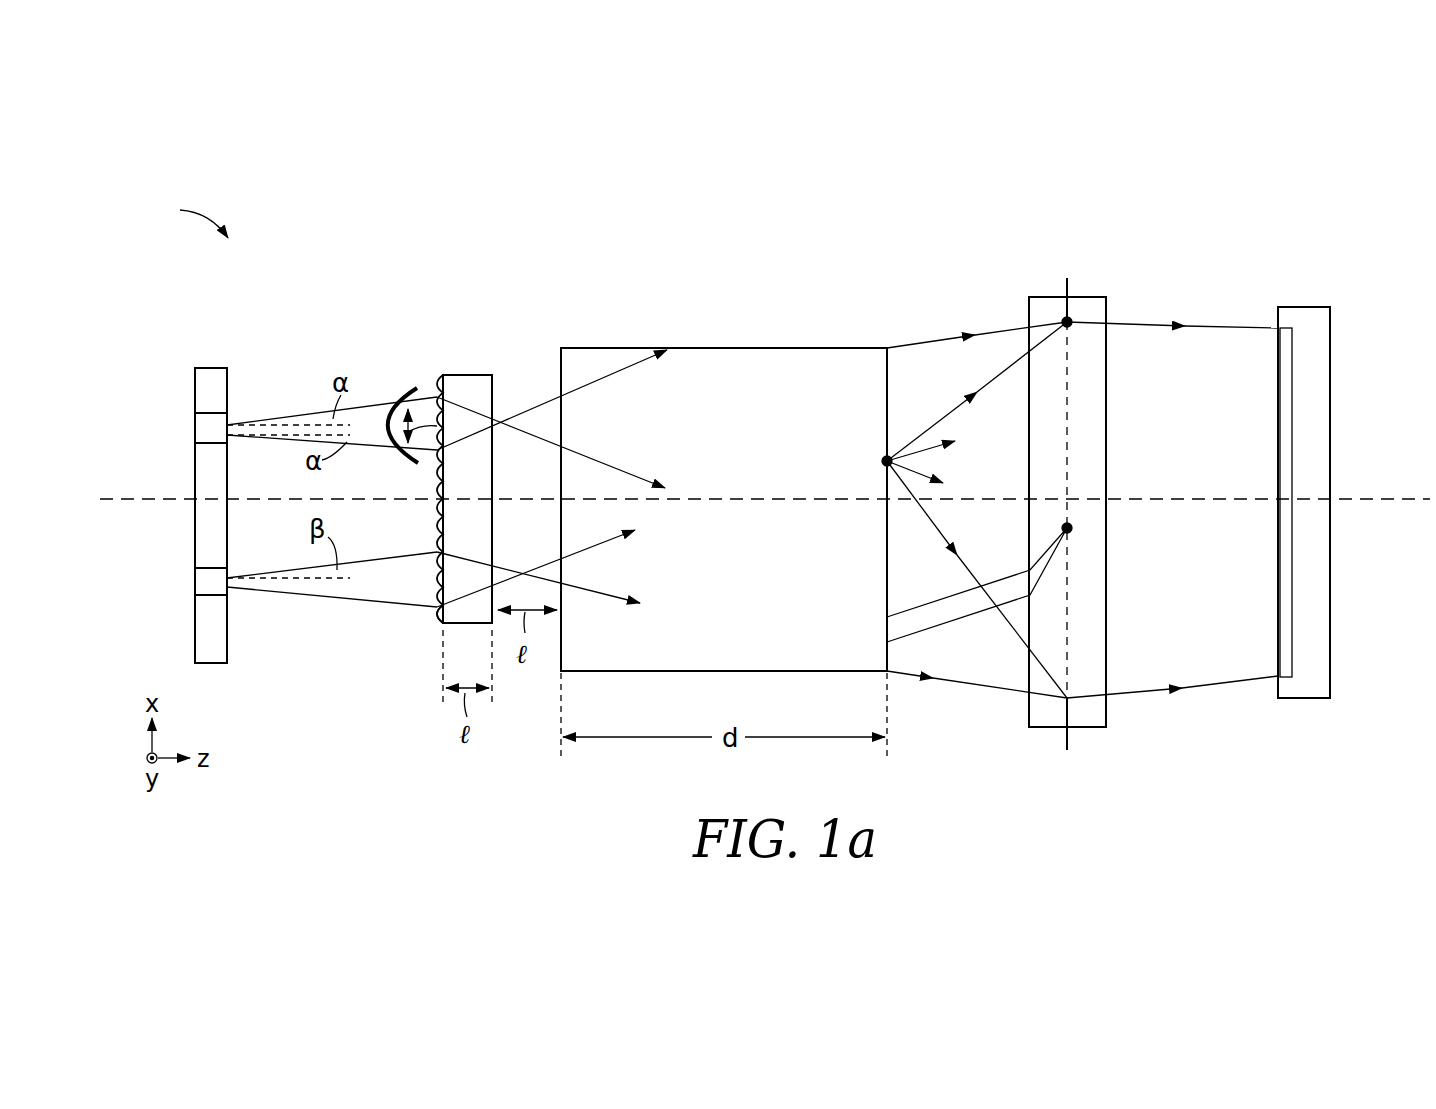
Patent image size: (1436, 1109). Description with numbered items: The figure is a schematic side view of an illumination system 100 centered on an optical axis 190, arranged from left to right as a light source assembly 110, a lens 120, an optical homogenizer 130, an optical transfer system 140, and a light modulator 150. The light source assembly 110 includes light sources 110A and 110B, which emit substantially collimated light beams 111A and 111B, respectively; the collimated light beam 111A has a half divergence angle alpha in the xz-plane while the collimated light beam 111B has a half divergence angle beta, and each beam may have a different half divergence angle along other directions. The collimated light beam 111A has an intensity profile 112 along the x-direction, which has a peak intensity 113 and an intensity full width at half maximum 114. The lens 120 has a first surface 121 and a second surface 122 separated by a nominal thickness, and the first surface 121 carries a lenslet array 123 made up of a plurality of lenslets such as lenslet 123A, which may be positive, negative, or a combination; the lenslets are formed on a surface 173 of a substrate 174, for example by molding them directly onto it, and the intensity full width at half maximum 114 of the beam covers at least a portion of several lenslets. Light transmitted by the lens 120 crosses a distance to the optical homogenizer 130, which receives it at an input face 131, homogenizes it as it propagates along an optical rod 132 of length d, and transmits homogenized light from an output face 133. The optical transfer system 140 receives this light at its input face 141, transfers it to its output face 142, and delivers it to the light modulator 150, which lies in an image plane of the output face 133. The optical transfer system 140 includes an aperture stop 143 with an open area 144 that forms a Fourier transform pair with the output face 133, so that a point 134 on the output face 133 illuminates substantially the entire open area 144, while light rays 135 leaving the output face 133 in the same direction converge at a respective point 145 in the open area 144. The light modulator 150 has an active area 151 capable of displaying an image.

The illumination system 100 is at (178, 217).
The light source assembly 110 is at (209, 368).
The light source 110A is at (195, 425).
The light source 110B is at (195, 583).
The collimated light beam 111A is at (363, 413).
The collimated light beam 111B is at (347, 588).
The intensity profile 112 is at (391, 446).
The peak intensity 113 is at (388, 410).
The intensity full width at half maximum 114 is at (445, 425).
The lens 120 is at (460, 375).
The first surface 121 is at (438, 380).
The second surface 122 is at (493, 380).
The lenslet array 123 is at (437, 532).
The lenslet 123A is at (437, 618).
The optical homogenizer 130 is at (800, 360).
The input face 131 is at (561, 658).
The optical rod 132 is at (673, 658).
The output face 133 is at (887, 366).
The point 134 is at (883, 461).
The light rays 135 is at (903, 635).
The optical transfer system 140 is at (1048, 717).
The input face 141 is at (1028, 668).
The output face 142 is at (1106, 623).
The aperture stop 143 is at (1067, 283).
The open area 144 is at (1067, 398).
The point 145 is at (1072, 528).
The light modulator 150 is at (1302, 313).
The active area 151 is at (1282, 430).
The surface 173 is at (442, 483).
The substrate 174 is at (475, 380).
The optical axis 190 is at (1395, 502).